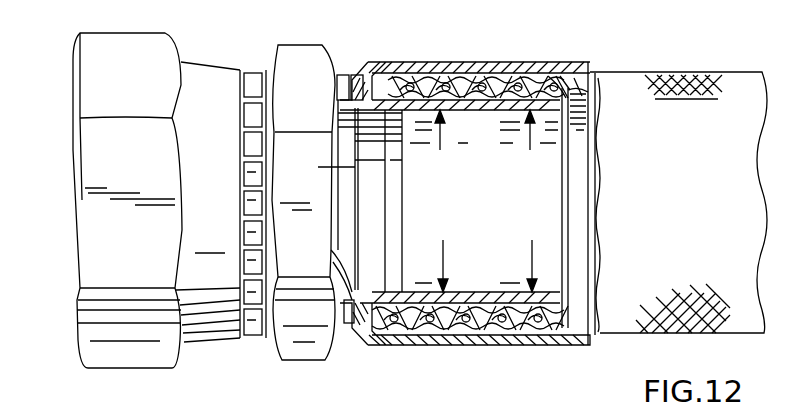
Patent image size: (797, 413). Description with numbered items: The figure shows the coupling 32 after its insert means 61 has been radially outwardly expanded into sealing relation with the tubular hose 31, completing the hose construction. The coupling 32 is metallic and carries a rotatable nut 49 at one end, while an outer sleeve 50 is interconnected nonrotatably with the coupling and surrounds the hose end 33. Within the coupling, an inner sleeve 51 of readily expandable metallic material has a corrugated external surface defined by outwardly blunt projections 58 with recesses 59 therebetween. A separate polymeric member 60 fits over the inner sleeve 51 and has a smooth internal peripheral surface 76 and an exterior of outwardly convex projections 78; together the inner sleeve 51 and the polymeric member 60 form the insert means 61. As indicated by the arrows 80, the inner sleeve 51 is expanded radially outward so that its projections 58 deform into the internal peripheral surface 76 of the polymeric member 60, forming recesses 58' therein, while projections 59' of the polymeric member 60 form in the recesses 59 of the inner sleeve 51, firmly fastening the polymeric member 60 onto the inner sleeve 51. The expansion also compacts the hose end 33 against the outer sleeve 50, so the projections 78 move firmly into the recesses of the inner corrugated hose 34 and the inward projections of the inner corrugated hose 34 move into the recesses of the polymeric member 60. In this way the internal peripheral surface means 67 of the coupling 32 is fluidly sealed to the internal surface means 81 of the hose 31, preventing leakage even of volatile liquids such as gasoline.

The tubular hose 31 is at (738, 72).
The coupling 32 is at (312, 55).
The hose end 33 is at (392, 335).
The inner corrugated hose 34 is at (577, 205).
The rotatable nut 49 is at (92, 48).
The outer sleeve 50 is at (523, 346).
The inner sleeve 51 is at (566, 270).
The projections 58 is at (482, 56).
The recesses 58' is at (466, 285).
The recesses 59 is at (478, 60).
The projections 59' is at (466, 267).
The polymeric member 60 is at (508, 88).
The insert means 61 is at (560, 70).
The internal peripheral surface means 67 is at (346, 286).
The internal peripheral surface 76 is at (499, 105).
The projections 78 is at (468, 342).
The arrows 80 is at (448, 252).
The internal surface means 81 is at (596, 290).